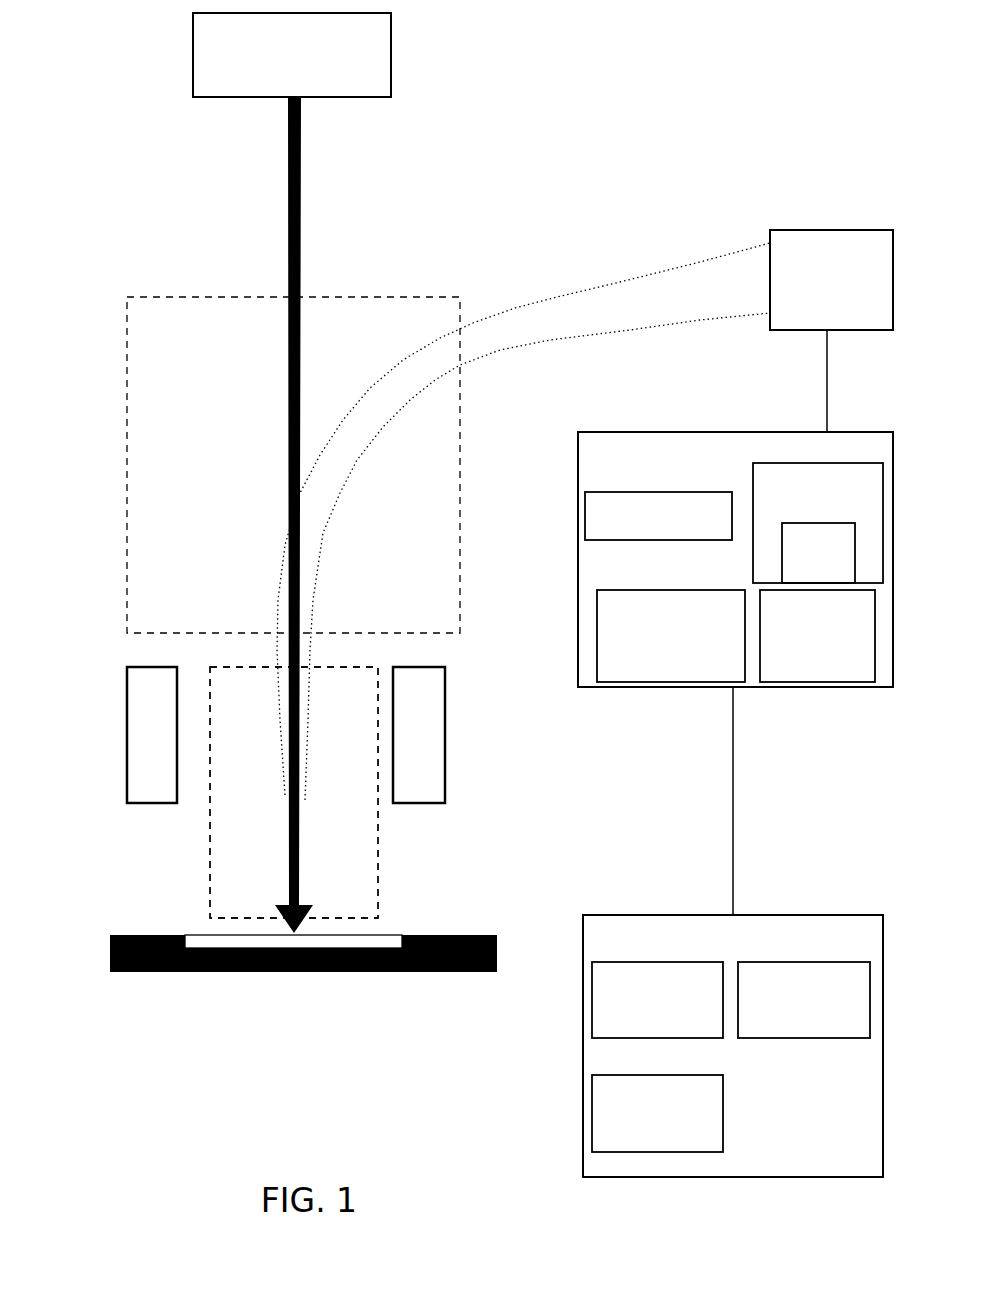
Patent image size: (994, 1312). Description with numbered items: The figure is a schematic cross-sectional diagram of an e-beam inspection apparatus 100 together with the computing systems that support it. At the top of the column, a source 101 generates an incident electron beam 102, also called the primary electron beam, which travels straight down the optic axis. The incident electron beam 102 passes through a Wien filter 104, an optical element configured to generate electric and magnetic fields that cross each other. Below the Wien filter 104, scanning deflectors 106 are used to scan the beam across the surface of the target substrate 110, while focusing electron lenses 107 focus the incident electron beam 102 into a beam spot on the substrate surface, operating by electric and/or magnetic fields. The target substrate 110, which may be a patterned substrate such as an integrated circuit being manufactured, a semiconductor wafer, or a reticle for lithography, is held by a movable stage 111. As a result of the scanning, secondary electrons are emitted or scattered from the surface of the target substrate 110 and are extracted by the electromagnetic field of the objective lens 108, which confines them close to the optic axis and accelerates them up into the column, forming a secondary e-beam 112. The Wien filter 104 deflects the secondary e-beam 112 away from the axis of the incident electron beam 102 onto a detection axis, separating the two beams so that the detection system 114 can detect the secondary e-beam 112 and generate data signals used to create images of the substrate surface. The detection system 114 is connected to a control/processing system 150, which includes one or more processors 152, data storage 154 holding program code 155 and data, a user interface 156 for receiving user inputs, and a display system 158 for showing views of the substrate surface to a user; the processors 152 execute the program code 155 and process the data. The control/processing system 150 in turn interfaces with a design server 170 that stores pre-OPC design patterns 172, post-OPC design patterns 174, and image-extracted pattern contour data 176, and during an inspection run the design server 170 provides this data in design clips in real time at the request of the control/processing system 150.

The e-beam inspection apparatus 100 is at (466, 1205).
The source 101 is at (292, 55).
The incident electron beam 102 is at (207, 515).
The Wien filter 104 is at (293, 465).
The scanning deflectors 106 is at (415, 690).
The focusing electron lenses 107 is at (332, 707).
The objective lens 108 is at (327, 878).
The target substrate 110 is at (240, 945).
The movable stage 111 is at (143, 980).
The secondary e-beam 112 is at (523, 521).
The detection system 114 is at (831, 280).
The control/processing system 150 is at (735, 559).
The processors 152 is at (658, 515).
The data storage 154 is at (818, 523).
The program code 155 is at (818, 553).
The user interface 156 is at (671, 636).
The display system 158 is at (817, 636).
The design server 170 is at (733, 1046).
The pre-OPC design patterns 172 is at (657, 1000).
The post-OPC design patterns 174 is at (657, 1113).
The image-extracted pattern contour data 176 is at (804, 1000).